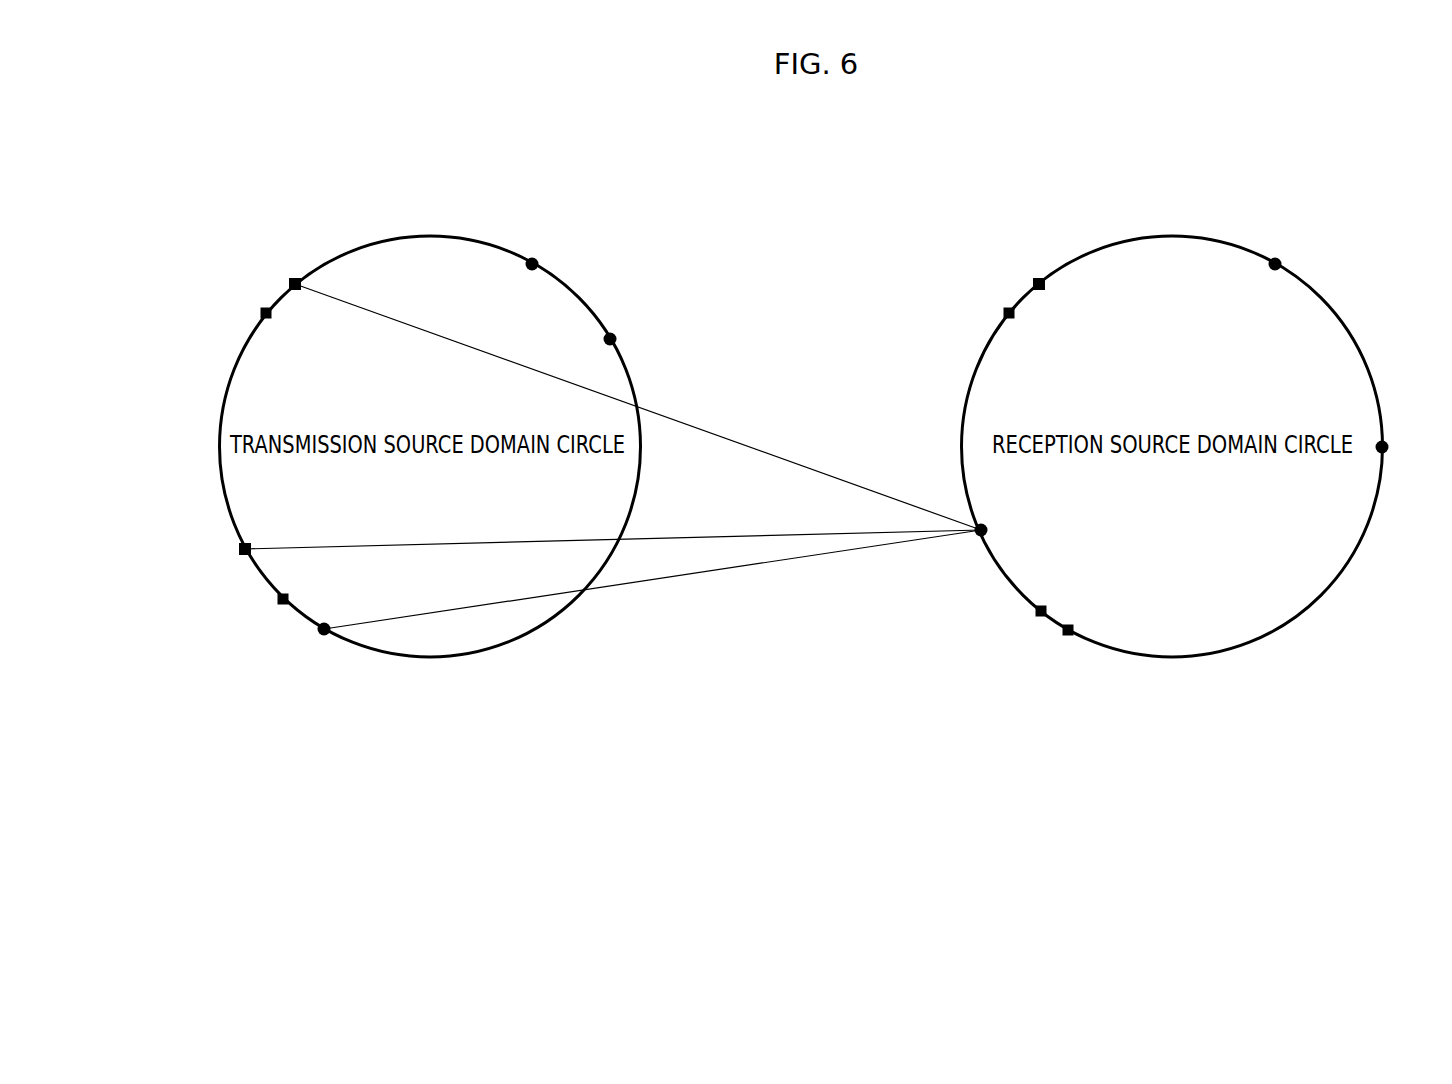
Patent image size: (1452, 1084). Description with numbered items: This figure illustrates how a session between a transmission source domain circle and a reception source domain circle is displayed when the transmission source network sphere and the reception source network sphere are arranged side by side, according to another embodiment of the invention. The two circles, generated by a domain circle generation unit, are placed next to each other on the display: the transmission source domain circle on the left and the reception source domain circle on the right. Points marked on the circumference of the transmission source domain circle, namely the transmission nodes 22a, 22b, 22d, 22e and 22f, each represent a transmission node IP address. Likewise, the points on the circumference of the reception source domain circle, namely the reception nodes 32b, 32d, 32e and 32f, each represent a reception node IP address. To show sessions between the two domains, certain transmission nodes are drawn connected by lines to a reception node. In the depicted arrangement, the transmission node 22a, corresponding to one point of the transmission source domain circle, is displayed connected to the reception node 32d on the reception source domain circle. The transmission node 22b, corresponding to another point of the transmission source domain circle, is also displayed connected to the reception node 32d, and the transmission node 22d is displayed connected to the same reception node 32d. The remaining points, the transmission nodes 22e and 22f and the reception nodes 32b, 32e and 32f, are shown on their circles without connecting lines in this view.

The transmission node 22a is at (322, 630).
The transmission node 22b is at (243, 549).
The transmission node 22d is at (293, 281).
The transmission node 22e is at (610, 336).
The transmission node 22f is at (532, 262).
The reception node 32b is at (1037, 283).
The reception node 32d is at (977, 535).
The reception node 32e is at (1275, 261).
The reception node 32f is at (1390, 450).